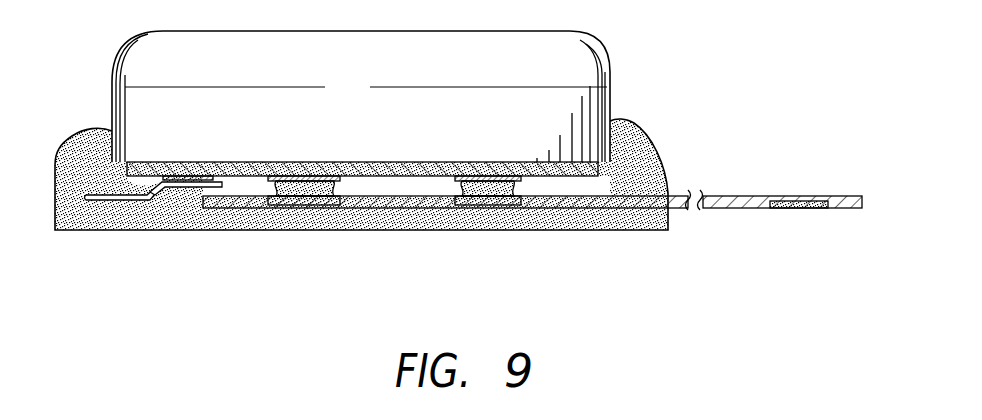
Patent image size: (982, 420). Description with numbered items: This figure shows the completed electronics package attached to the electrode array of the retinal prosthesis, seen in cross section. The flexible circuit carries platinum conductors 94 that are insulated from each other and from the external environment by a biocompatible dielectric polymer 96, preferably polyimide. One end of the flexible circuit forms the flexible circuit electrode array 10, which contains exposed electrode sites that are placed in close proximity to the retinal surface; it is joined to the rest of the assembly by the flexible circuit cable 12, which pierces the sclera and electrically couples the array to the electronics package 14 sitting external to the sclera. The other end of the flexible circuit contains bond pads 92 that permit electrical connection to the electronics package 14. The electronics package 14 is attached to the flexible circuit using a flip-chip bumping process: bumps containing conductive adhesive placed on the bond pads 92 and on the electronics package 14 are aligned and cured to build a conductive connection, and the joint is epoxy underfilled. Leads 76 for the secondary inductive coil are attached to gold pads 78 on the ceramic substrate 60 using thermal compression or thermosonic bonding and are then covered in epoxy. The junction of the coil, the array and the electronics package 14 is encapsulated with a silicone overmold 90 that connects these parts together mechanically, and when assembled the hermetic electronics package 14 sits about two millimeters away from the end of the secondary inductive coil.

The flexible circuit electrode array 10 is at (800, 210).
The flexible circuit cable 12 is at (752, 193).
The electronics package 14 is at (365, 97).
The ceramic substrate 60 is at (124, 173).
The leads 76 is at (84, 197).
The gold pads 78 is at (220, 183).
The silicone overmold 90 is at (653, 125).
The bond pads 92 is at (322, 205).
The platinum conductors 94 is at (403, 206).
The biocompatible dielectric polymer 96 is at (183, 194).